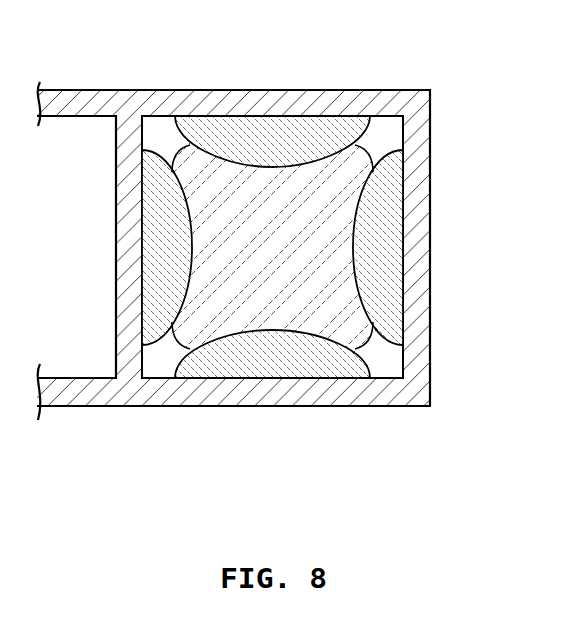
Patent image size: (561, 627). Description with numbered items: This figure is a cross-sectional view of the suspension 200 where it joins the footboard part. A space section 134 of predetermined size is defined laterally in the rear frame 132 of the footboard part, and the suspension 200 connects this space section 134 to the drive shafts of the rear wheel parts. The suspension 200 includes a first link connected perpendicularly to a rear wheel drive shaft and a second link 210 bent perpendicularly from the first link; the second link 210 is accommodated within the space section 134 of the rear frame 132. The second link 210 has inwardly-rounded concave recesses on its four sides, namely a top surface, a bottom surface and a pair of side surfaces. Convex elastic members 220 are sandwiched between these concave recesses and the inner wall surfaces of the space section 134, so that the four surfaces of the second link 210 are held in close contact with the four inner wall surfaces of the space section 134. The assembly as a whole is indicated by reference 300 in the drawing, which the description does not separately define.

The frame housing 300 is at (233, 218).
The rear frame 132 is at (331, 92).
The space section 134 is at (385, 143).
The suspension 200 is at (323, 303).
The second link 210 is at (325, 243).
The convex elastic member 220 is at (157, 323).